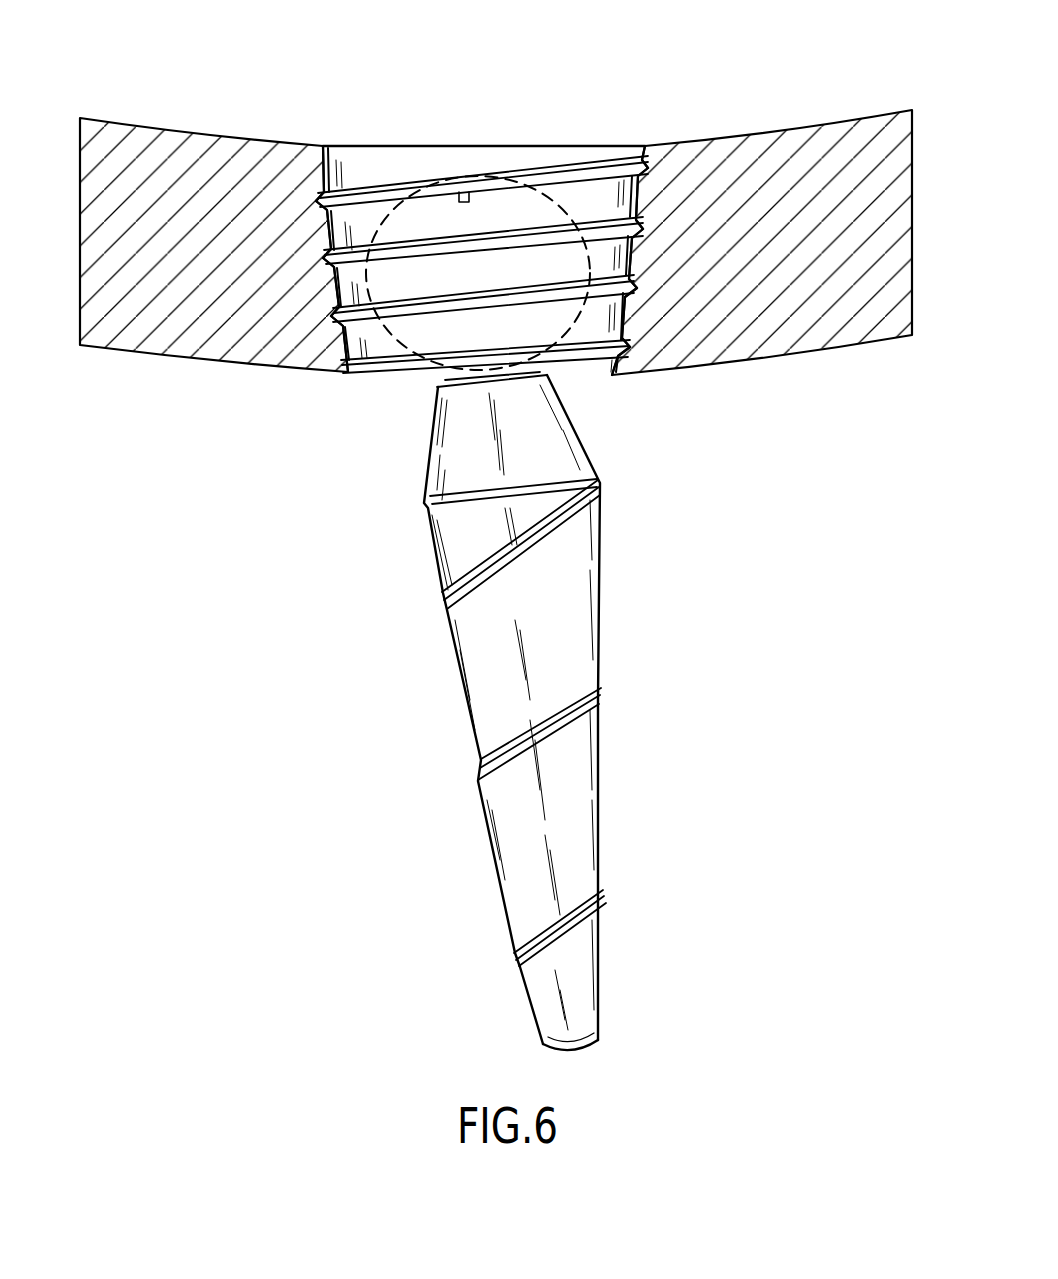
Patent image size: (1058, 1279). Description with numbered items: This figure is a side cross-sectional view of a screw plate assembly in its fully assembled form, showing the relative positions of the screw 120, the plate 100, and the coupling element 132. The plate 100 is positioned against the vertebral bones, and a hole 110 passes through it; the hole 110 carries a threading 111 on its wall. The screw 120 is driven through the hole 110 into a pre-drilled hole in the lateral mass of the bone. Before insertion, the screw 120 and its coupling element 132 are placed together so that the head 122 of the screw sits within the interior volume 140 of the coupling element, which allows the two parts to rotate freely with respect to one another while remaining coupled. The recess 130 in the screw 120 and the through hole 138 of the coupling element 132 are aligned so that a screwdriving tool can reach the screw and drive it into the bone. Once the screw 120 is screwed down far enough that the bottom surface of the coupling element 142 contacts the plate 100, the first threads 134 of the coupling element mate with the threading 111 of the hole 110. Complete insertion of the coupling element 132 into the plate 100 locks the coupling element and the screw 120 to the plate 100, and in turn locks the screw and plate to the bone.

The plate 100 is at (793, 127).
The hole 110 is at (603, 128).
The threading 111 is at (328, 250).
The screw 120 is at (387, 572).
The head 122 is at (470, 291).
The recess 130 is at (464, 196).
The coupling element 132 is at (373, 158).
The first threads 134 is at (612, 232).
The through hole 138 is at (495, 146).
The interior volume 140 is at (413, 222).
The bottom surface of the coupling element 142 is at (393, 378).